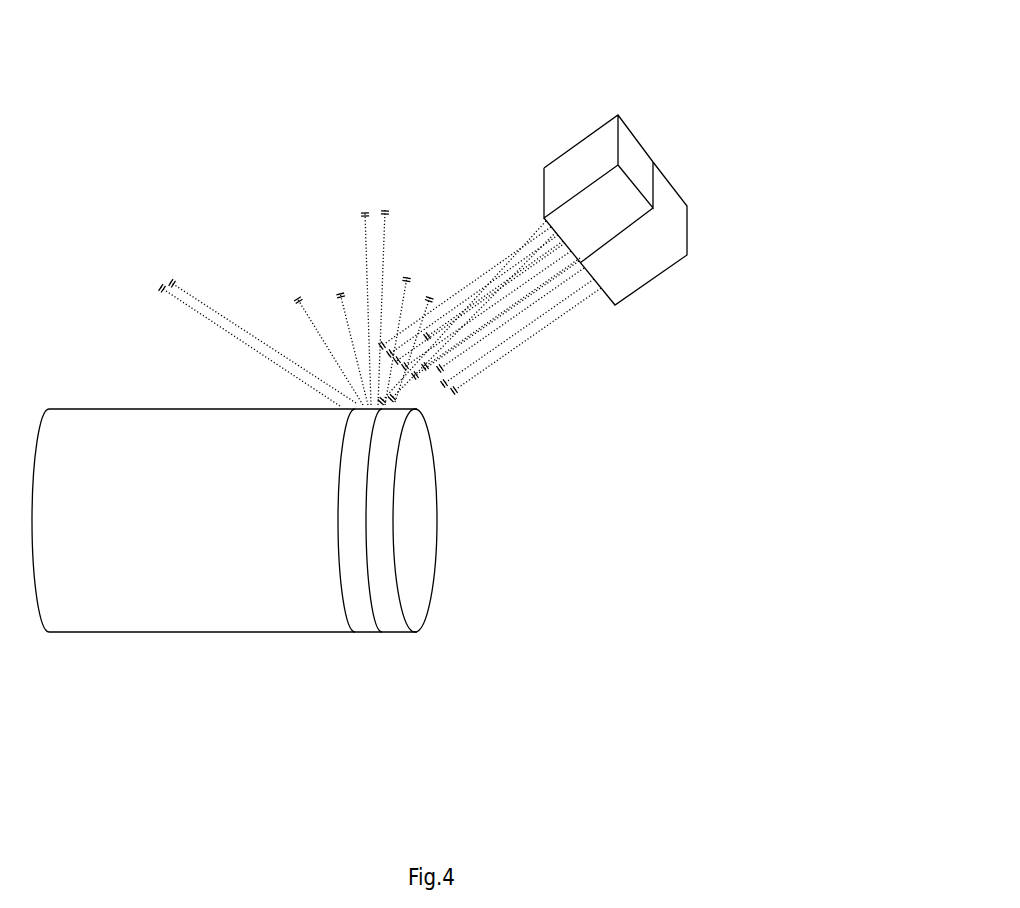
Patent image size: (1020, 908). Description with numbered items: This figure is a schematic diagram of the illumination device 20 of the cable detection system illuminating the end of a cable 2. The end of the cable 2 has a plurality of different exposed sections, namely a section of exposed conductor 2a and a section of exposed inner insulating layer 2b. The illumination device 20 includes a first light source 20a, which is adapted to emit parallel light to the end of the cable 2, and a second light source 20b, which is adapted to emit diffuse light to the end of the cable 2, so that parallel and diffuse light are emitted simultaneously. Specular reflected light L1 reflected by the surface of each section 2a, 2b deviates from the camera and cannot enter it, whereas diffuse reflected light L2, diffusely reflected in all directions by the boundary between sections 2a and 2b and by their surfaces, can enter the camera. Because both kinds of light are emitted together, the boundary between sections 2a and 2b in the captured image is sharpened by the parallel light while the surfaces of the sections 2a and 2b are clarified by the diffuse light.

The cable 2 is at (150, 606).
The section of exposed conductor 2a is at (396, 622).
The section of exposed inner insulating layer 2b is at (365, 622).
The illumination device 20 is at (656, 155).
The first light source 20a is at (634, 152).
The second light source 20b is at (667, 197).
The specular reflected light L1 is at (214, 316).
The diffuse reflected light L2 is at (363, 265).